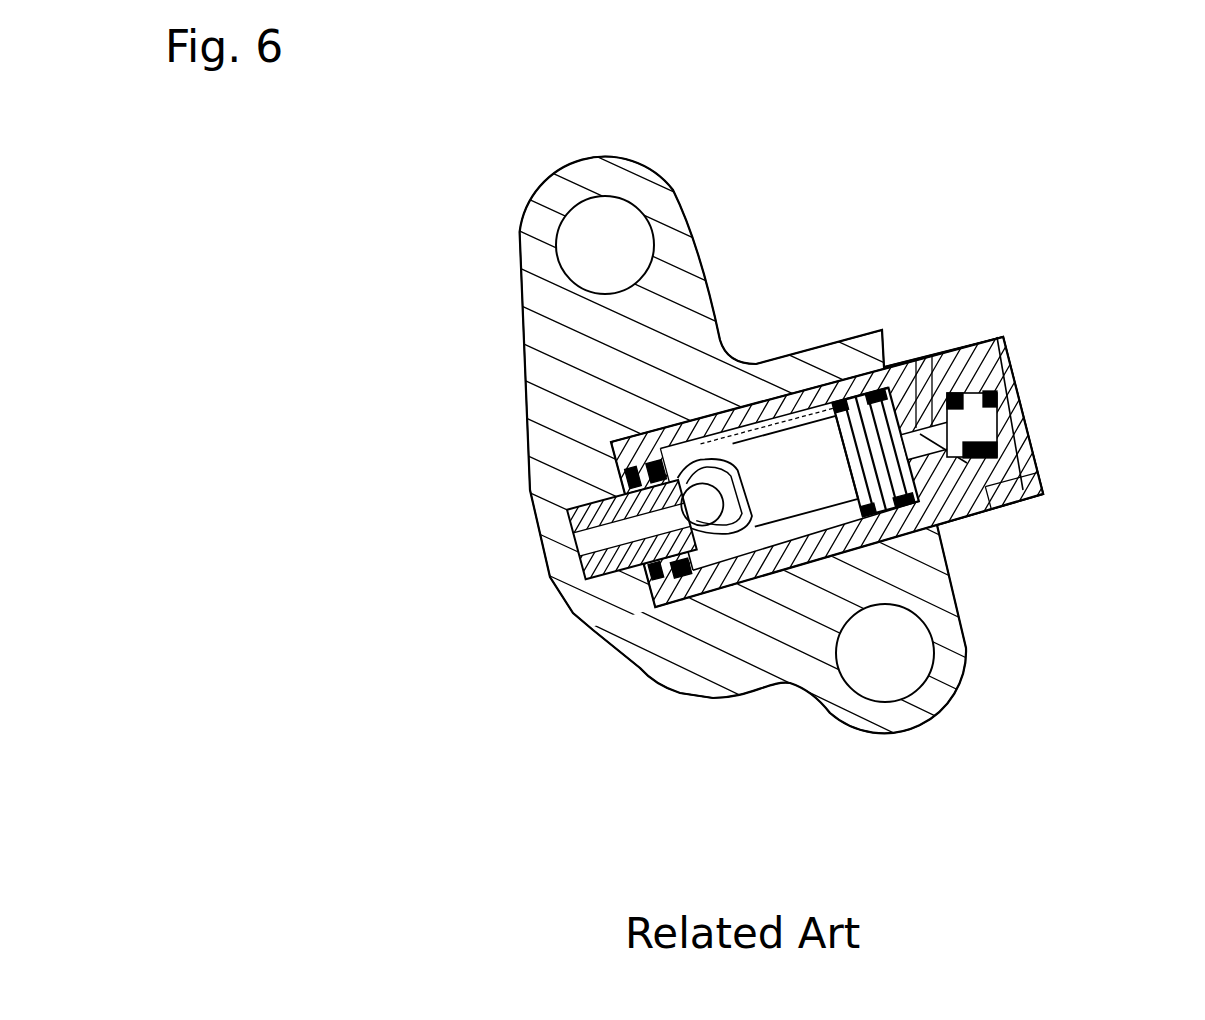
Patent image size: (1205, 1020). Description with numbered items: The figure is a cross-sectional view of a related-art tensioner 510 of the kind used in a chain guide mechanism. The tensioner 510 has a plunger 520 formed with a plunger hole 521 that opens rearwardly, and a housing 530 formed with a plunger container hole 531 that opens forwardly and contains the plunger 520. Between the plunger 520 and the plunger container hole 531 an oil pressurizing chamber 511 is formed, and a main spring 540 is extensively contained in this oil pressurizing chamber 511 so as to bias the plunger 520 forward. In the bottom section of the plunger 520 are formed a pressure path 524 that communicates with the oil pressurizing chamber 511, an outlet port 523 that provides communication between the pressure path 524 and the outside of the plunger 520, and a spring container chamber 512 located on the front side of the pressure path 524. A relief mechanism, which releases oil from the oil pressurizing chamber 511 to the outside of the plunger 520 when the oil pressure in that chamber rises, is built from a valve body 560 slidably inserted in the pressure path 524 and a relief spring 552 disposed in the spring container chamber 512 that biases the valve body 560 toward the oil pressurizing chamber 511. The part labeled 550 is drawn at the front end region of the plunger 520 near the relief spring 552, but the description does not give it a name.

The tensioner 510 is at (388, 170).
The oil pressurizing chamber 511 is at (768, 520).
The spring container chamber 512 is at (983, 422).
The plunger 520 is at (948, 340).
The plunger hole 521 is at (803, 522).
The outlet port 523 is at (917, 370).
The pressure path 524 is at (886, 380).
The housing 530 is at (570, 350).
The plunger container hole 531 is at (612, 450).
The main spring 540 is at (675, 612).
The end cap 550 is at (1033, 442).
The relief spring 552 is at (977, 336).
The valve body 560 is at (1017, 505).